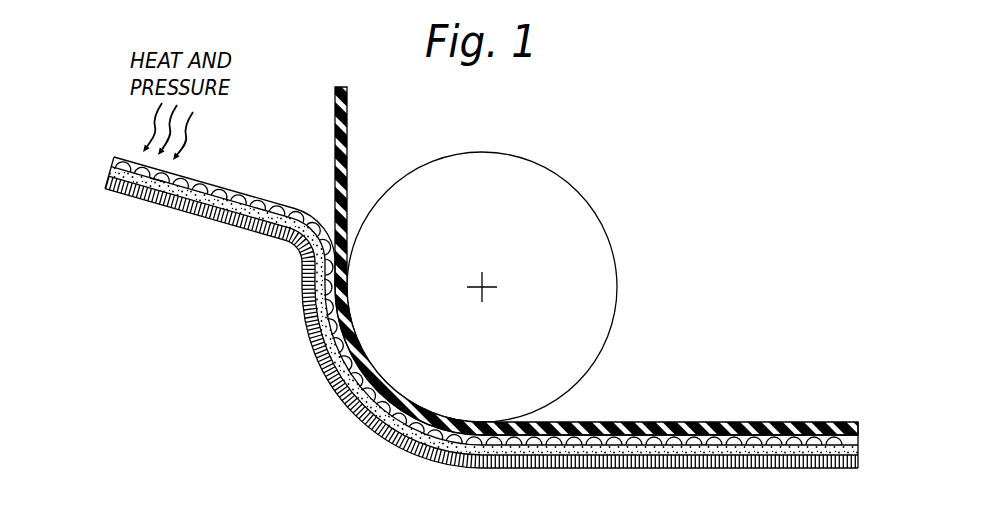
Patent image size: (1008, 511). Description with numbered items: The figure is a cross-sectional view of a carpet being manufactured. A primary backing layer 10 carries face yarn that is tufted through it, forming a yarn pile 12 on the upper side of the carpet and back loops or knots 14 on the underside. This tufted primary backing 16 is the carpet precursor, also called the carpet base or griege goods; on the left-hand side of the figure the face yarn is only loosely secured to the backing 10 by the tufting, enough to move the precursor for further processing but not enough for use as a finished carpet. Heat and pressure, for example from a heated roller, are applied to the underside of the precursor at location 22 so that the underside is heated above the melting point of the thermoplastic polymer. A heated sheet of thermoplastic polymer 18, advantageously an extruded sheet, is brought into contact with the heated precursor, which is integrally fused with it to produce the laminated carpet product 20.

The primary backing layer 10 is at (221, 198).
The yarn pile 12 is at (238, 224).
The back loops or knots 14 is at (273, 203).
The tufted primary backing 16 is at (102, 152).
The polymer sheet 18 is at (345, 137).
The carpet product 20 is at (865, 413).
The location of heat and pressure application 22 is at (156, 168).